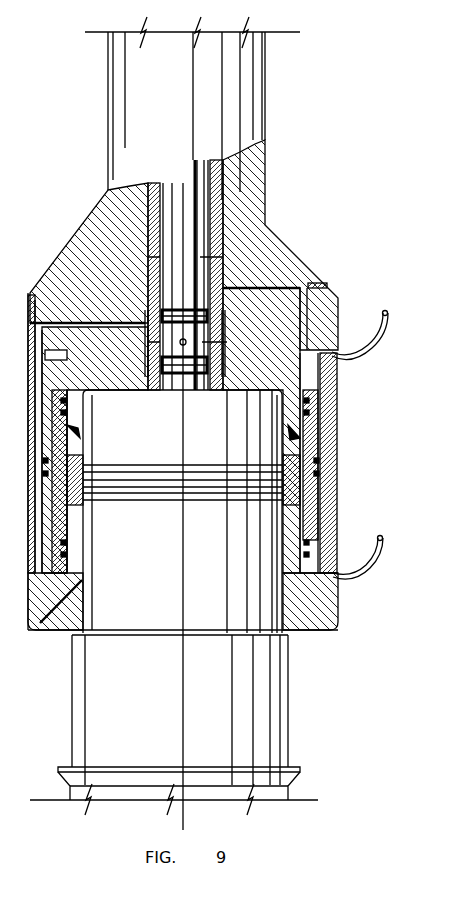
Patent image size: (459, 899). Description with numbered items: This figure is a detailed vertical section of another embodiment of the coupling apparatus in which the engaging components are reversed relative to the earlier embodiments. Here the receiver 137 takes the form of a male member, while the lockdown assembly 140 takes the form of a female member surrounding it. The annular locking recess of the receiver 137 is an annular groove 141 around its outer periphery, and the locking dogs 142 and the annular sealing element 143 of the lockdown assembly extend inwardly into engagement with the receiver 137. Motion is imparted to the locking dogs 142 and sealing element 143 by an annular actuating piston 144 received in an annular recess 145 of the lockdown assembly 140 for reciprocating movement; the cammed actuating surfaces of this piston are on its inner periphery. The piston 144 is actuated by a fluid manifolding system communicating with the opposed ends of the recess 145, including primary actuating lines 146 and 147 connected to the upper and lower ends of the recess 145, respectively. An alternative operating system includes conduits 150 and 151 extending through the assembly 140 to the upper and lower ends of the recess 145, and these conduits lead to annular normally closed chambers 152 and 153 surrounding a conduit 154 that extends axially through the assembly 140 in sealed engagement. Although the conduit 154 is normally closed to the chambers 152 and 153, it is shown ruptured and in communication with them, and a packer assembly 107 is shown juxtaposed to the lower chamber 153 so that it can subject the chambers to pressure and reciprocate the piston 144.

The packer assembly 107 is at (177, 387).
The receiver 137 is at (208, 707).
The lockdown assembly 140 is at (250, 193).
The annular groove 141 is at (172, 500).
The locking dogs 142 is at (82, 465).
The annular sealing element 143 is at (70, 433).
The annular actuating piston 144 is at (317, 410).
The annular recess 145 is at (313, 373).
The primary actuating line 146 is at (388, 314).
The primary actuating line 147 is at (383, 540).
The conduit 150 is at (280, 288).
The conduit 151 is at (65, 323).
The annular normally closed chamber 152 is at (228, 230).
The annular normally closed chamber 153 is at (233, 360).
The conduit 154 is at (222, 159).